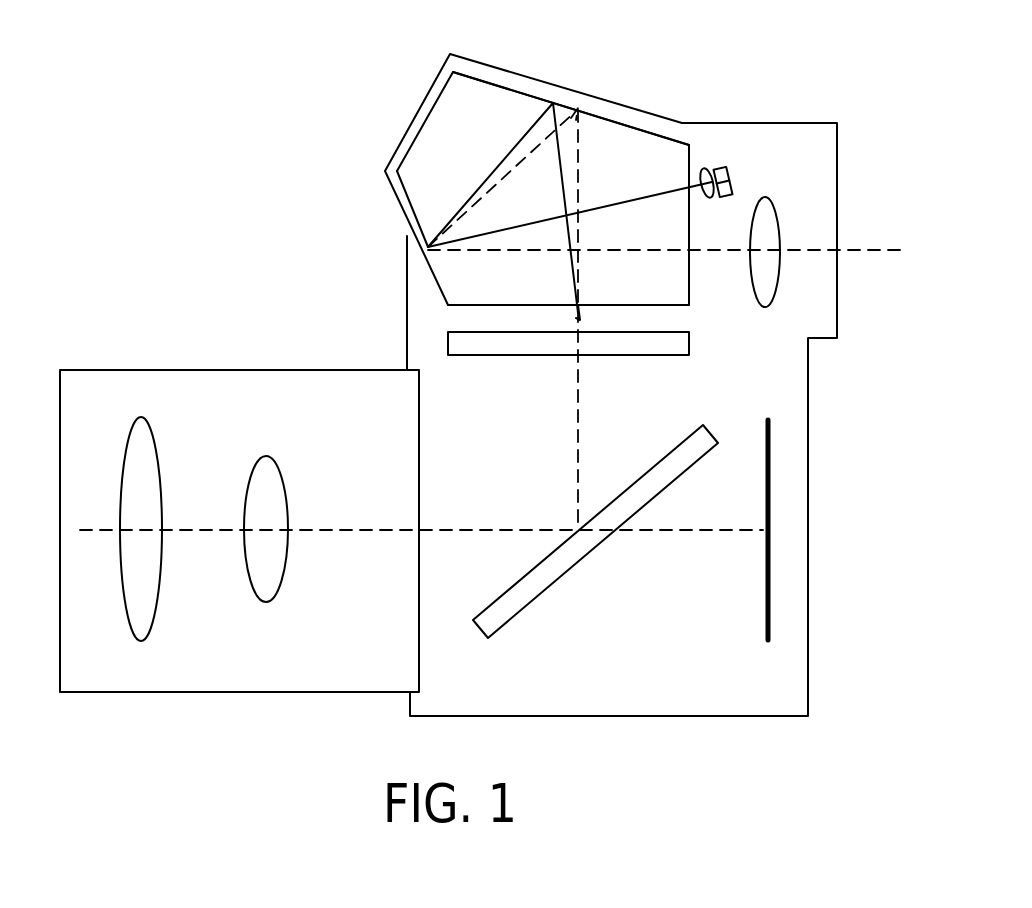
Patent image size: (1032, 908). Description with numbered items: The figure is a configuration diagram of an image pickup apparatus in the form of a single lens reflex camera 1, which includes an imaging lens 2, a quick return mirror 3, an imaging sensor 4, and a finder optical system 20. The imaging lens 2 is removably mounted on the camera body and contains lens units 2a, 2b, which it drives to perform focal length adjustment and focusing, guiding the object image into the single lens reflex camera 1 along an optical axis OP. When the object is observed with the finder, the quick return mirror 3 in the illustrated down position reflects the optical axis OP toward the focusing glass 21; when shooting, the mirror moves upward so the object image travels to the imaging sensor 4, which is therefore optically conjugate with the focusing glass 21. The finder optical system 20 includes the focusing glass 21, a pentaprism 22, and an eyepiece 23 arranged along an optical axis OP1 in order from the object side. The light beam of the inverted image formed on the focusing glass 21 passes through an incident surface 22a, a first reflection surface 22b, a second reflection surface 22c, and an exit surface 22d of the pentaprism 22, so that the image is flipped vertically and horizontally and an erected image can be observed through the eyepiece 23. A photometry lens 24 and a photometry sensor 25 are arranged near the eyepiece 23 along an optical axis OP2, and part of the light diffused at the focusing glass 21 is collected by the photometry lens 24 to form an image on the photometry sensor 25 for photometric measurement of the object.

The single lens reflex camera 1 is at (258, 134).
The imaging lens 2 is at (205, 368).
The lens unit 2a is at (143, 598).
The lens unit 2b is at (268, 572).
The quick return mirror 3 is at (525, 607).
The imaging sensor 4 is at (770, 582).
The finder optical system 20 is at (367, 227).
The focusing glass 21 is at (443, 353).
The pentaprism 22 is at (535, 176).
The incident surface 22a is at (478, 305).
The first reflection surface 22b is at (563, 103).
The second reflection surface 22c is at (395, 203).
The exit surface 22d is at (692, 265).
The eyepiece 23 is at (780, 270).
The photometry lens 24 is at (703, 168).
The photometry sensor 25 is at (730, 168).
The optical axis OP is at (326, 530).
The optical axis OP1 is at (872, 250).
The optical axis OP2 is at (647, 197).